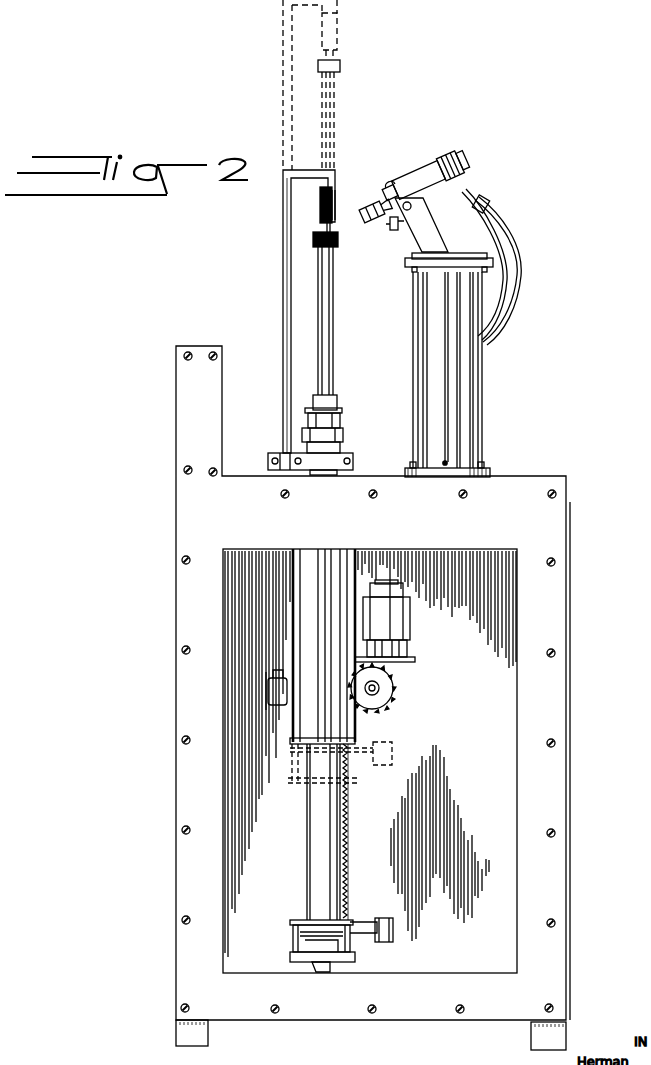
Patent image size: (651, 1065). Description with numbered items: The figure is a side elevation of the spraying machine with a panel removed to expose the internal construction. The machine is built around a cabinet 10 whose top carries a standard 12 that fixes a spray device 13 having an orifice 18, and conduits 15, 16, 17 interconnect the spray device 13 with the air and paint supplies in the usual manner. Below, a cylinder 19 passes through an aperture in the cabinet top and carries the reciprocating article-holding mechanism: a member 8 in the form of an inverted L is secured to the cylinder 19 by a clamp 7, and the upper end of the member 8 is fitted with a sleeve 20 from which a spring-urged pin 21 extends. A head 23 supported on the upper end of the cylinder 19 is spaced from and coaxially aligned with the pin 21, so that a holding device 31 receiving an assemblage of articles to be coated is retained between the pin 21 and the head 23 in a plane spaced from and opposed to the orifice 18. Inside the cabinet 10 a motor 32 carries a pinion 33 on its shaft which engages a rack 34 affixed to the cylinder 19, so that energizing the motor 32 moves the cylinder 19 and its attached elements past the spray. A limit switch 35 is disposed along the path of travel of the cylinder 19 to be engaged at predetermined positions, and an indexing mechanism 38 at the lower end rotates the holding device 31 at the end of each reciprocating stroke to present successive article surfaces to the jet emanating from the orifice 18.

The clamp 7 is at (272, 458).
The member 8 is at (283, 292).
The cabinet 10 is at (572, 578).
The standard 12 is at (482, 405).
The spray device 13 is at (428, 176).
The conduit 15 is at (402, 246).
The conduit 16 is at (517, 262).
The conduit 17 is at (497, 249).
The orifice 18 is at (369, 220).
The cylinder 19 is at (343, 452).
The sleeve 20 is at (337, 205).
The pin 21 is at (322, 233).
The head 23 is at (341, 424).
The holding device 31 is at (339, 316).
The motor 32 is at (410, 624).
The pinion 33 is at (397, 696).
The rack 34 is at (348, 884).
The limit switch 35 is at (280, 708).
The indexing mechanism 38 is at (355, 940).